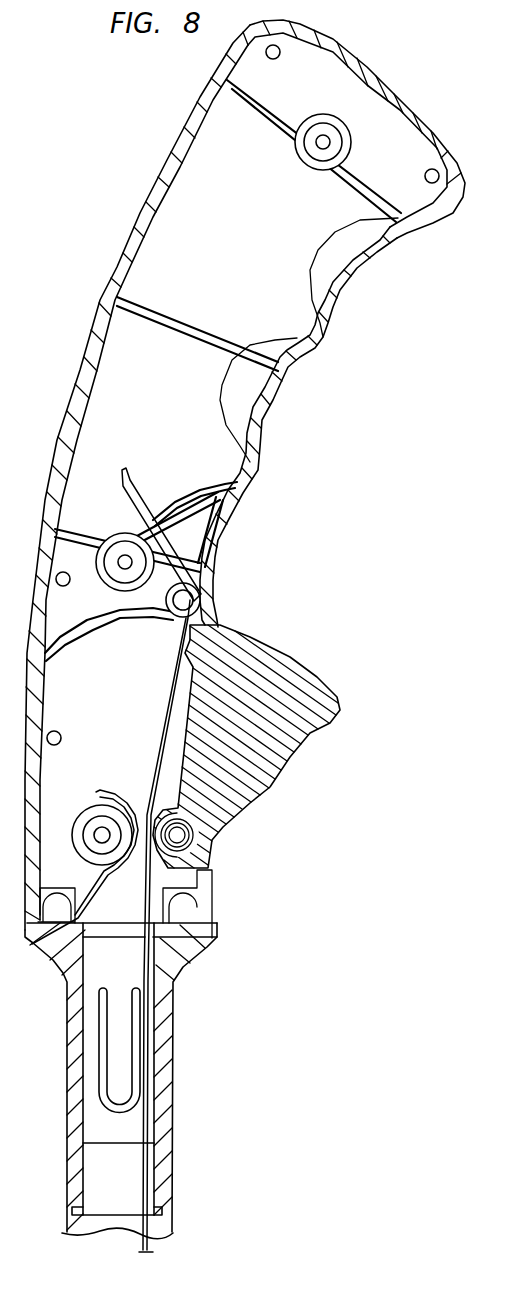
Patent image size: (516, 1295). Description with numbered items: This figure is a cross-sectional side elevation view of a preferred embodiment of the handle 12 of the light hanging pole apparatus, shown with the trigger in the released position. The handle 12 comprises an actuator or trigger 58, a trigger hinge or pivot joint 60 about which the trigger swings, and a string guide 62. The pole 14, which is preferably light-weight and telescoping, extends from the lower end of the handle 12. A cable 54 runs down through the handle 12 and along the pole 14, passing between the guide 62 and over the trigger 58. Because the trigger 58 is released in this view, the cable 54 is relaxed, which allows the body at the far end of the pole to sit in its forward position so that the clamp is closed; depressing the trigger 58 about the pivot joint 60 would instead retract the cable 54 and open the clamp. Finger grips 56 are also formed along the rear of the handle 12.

The handle 12 is at (124, 168).
The pole 14 is at (63, 1222).
The cable 54 is at (167, 724).
The grip ridges 56 is at (337, 310).
The actuator or trigger 58 is at (322, 684).
The trigger hinge or pivot joint 60 is at (180, 835).
The string guide 62 is at (103, 884).